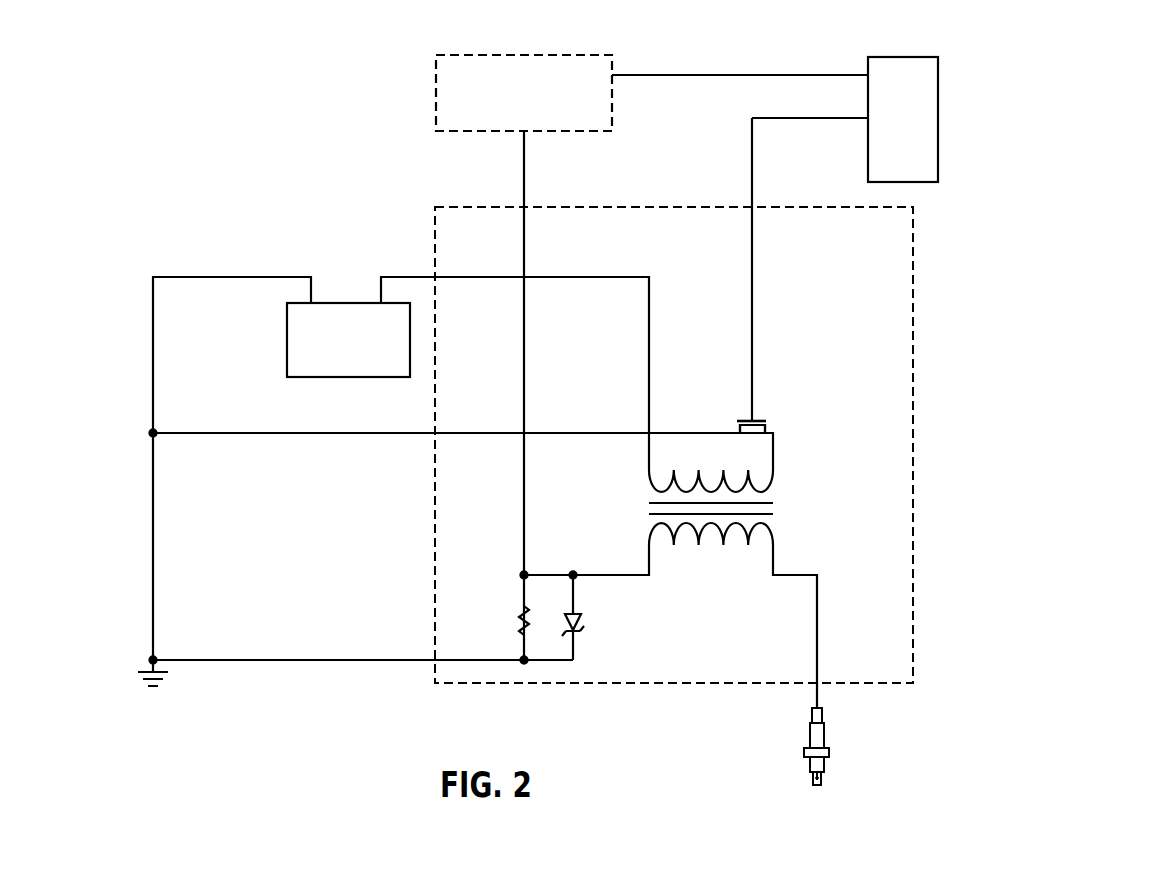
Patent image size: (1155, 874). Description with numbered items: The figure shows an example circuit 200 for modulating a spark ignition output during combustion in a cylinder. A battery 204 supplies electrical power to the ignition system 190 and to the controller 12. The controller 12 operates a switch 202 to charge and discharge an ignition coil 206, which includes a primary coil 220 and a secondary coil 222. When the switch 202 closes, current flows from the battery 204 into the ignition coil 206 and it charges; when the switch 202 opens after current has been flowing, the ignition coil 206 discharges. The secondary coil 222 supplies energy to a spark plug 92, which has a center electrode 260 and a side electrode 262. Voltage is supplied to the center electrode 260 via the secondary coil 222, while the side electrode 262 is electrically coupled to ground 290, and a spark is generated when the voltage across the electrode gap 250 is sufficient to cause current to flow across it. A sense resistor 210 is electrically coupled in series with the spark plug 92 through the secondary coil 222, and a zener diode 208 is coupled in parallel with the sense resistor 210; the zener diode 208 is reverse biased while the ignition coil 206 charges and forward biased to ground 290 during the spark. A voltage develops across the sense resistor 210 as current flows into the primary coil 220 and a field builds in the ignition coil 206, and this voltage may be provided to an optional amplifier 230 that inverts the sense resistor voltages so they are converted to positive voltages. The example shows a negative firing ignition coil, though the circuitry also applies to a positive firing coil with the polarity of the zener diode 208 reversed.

The ignition system 200 is at (1074, 82).
The optional amplifier 230 is at (434, 73).
The controller 12 is at (913, 127).
The ignition system 190 is at (913, 273).
The battery 204 is at (364, 348).
The switch 202 is at (746, 420).
The ignition coil 206 is at (745, 510).
The primary coil 220 is at (702, 470).
The secondary coil 222 is at (720, 546).
The sense resistor 210 is at (520, 621).
The zener diode 208 is at (584, 630).
The ground 290 is at (148, 671).
The spark plug 92 is at (795, 760).
The center electrode 260 is at (812, 778).
The electrode gap 250 is at (812, 778).
The side electrode 262 is at (822, 784).